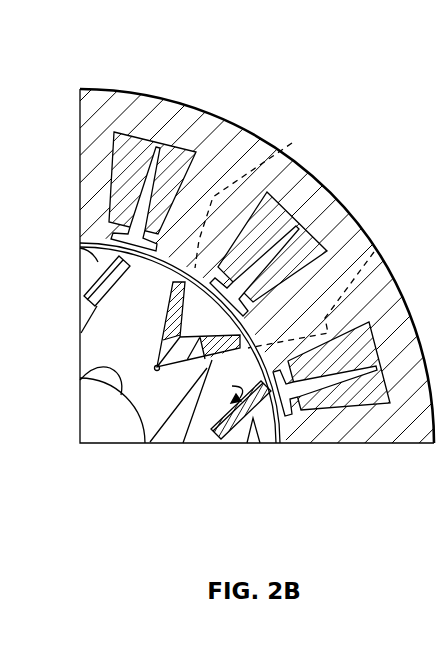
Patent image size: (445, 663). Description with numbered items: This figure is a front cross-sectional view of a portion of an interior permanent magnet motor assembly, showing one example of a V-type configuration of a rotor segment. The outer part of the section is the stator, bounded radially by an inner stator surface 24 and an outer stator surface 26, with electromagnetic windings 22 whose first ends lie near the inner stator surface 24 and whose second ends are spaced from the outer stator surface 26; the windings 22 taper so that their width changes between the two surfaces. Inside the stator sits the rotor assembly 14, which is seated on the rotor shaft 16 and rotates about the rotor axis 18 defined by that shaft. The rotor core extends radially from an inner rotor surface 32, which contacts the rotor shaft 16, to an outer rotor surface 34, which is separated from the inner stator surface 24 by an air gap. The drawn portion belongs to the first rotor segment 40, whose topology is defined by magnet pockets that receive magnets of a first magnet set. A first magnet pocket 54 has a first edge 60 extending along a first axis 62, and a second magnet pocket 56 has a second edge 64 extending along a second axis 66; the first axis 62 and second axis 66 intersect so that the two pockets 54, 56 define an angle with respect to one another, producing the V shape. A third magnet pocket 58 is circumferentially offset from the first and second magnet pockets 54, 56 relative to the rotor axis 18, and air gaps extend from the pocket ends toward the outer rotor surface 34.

The rotor assembly 14 is at (172, 463).
The rotor shaft 16 is at (93, 421).
The rotor axis 18 is at (95, 425).
The electromagnetic windings 22 is at (178, 143).
The inner stator surface 24 is at (96, 242).
The outer stator surface 26 is at (110, 89).
The inner rotor surface 32 is at (104, 369).
The outer rotor surface 34 is at (60, 258).
The first rotor segment 40 is at (258, 443).
The first magnet pocket 54 is at (165, 327).
The second magnet pocket 56 is at (200, 367).
The third magnet pocket 58 is at (98, 311).
The first edge 60 is at (100, 346).
The first axis 62 is at (292, 143).
The second edge 64 is at (158, 445).
The second axis 66 is at (374, 250).